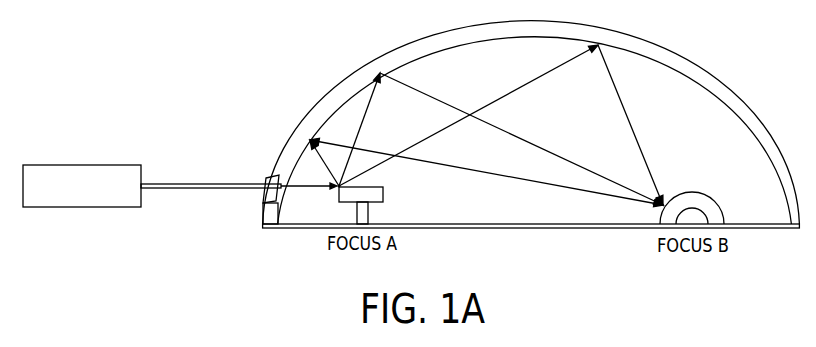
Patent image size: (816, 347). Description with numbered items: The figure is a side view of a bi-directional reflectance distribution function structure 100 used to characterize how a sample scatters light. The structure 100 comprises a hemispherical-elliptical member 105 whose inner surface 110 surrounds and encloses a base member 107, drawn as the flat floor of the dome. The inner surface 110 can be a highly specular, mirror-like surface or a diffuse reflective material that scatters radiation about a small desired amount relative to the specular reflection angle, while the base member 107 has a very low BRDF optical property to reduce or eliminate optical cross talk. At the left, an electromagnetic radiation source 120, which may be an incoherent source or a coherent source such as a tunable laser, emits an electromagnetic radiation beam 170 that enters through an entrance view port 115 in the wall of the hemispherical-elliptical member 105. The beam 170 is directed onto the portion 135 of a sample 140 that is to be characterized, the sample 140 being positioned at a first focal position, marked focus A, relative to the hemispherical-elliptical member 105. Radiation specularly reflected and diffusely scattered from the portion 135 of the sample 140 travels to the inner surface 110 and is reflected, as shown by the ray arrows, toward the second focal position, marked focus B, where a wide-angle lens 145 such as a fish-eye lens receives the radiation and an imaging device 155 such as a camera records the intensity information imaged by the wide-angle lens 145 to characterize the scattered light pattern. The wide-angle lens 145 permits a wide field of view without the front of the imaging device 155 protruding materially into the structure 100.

The bi-directional reflectance distribution function structure 100 is at (212, 74).
The hemispherical-elliptical member 105 is at (703, 70).
The base member 107 is at (772, 229).
The inner surface 110 is at (678, 79).
The entrance view port 115 is at (255, 201).
The electromagnetic radiation source 120 is at (93, 196).
The portion of sample 135 is at (326, 204).
The sample 140 is at (383, 195).
The wide-angle lens 145 is at (697, 192).
The imaging device 155 is at (705, 216).
The electromagnetic radiation beam 170 is at (180, 185).